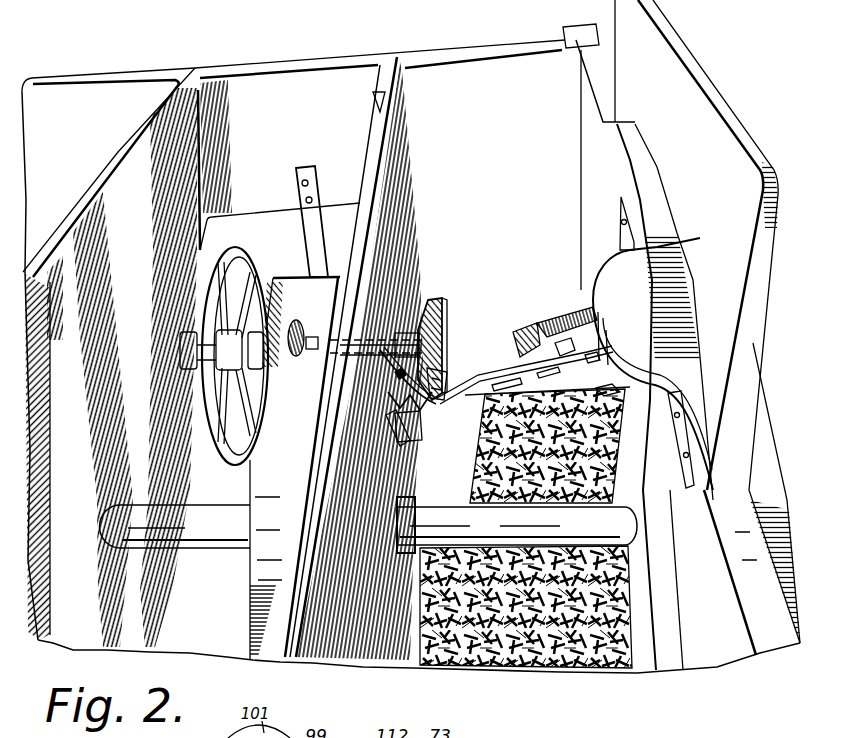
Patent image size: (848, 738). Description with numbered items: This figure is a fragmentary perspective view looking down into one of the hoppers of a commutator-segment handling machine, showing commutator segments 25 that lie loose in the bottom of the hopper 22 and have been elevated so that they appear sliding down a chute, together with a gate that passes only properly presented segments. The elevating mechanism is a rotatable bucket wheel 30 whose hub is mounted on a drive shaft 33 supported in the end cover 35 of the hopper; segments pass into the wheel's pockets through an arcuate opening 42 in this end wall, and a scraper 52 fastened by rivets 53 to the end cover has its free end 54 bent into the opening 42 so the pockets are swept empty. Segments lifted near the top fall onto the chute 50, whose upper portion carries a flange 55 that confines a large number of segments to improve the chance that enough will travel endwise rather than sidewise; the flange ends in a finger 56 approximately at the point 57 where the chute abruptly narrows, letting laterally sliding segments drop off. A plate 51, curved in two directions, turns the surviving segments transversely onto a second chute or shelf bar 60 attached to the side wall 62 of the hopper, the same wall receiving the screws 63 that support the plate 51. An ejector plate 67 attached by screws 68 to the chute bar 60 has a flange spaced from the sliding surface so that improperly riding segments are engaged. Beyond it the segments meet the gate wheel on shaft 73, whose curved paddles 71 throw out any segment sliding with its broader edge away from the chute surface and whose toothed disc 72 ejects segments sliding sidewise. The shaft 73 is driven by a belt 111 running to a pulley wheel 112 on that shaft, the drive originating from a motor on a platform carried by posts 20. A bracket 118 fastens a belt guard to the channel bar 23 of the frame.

The posts 20 is at (568, 27).
The hopper 22 is at (118, 72).
The channel bar 23 is at (310, 62).
The segments 25 is at (506, 388).
The bucket wheel 30 is at (758, 378).
The drive shaft 33 is at (398, 532).
The end cover 35 is at (778, 638).
The arcuate opening 42 is at (652, 306).
The chute 50 is at (606, 390).
The plate 51 is at (437, 417).
The scraper 52 is at (593, 280).
The rivets 53 is at (677, 418).
The free end 54 is at (651, 265).
The flange 55 is at (575, 314).
The finger 56 is at (526, 333).
The narrowed portion of chute 57 is at (520, 368).
The shelf bar 60 is at (405, 437).
The side wall 62 is at (327, 648).
The screws 63 is at (400, 334).
The ejector plate 67 is at (398, 448).
The screws 68 is at (398, 380).
The paddles 71 is at (437, 300).
The toothed disc 72 is at (448, 312).
The shaft 73 is at (330, 344).
The belt 111 is at (304, 325).
The pulley wheel 112 is at (314, 330).
The bracket 118 is at (307, 238).